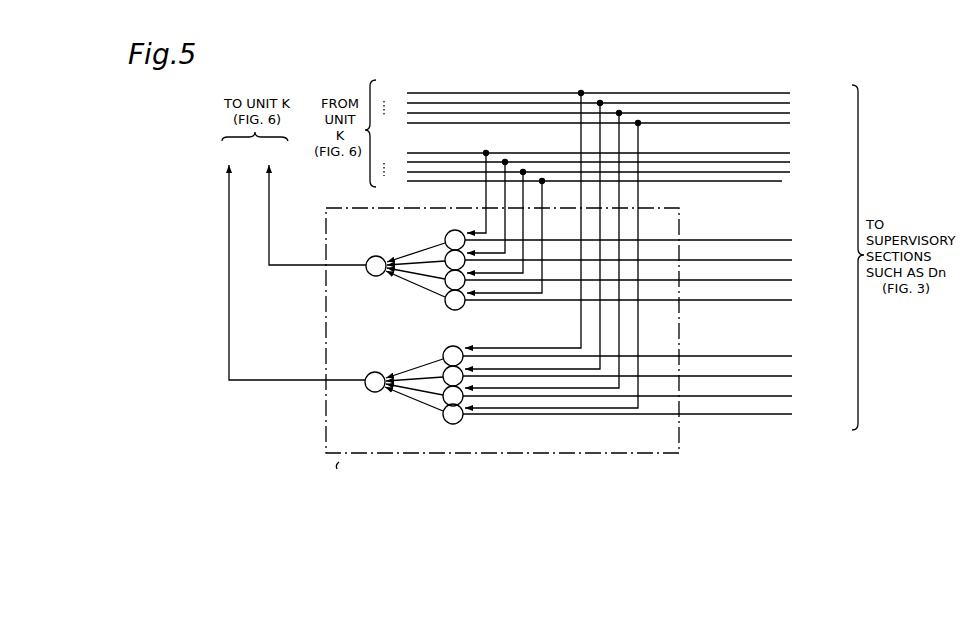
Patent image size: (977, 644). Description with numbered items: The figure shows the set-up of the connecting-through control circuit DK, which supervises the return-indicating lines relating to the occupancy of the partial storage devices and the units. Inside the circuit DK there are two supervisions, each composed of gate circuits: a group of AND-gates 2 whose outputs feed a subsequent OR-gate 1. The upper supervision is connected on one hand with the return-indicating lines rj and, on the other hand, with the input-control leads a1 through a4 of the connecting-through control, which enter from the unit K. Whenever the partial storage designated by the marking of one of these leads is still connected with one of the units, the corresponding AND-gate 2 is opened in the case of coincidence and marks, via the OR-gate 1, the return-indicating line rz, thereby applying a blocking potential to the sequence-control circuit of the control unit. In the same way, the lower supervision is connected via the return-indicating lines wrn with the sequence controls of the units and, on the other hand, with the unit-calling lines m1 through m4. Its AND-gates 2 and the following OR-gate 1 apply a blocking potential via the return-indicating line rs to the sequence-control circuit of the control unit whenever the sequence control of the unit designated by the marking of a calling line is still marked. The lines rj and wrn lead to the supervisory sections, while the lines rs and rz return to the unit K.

The connecting-through control circuit DK is at (630, 435).
The OR/combining element 1 is at (375, 335).
The AND gate element 2 is at (454, 327).
The return-indicating line rs is at (295, 262).
The return-indicating line rz is at (314, 204).
The return-indicating lines rj is at (802, 233).
The return-indicating lines wrn is at (802, 348).
The unit-calling line m1 is at (583, 93).
The unit-calling line m4 is at (583, 123).
The input-control lead a1 is at (584, 153).
The input-control lead a4 is at (580, 181).